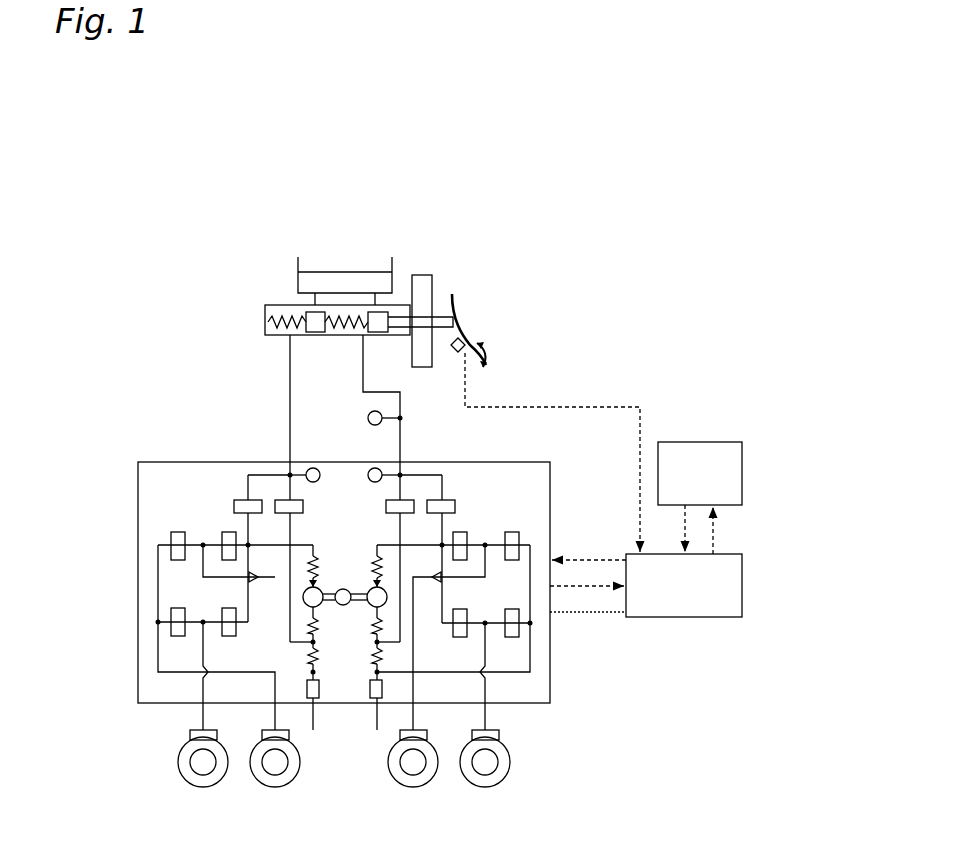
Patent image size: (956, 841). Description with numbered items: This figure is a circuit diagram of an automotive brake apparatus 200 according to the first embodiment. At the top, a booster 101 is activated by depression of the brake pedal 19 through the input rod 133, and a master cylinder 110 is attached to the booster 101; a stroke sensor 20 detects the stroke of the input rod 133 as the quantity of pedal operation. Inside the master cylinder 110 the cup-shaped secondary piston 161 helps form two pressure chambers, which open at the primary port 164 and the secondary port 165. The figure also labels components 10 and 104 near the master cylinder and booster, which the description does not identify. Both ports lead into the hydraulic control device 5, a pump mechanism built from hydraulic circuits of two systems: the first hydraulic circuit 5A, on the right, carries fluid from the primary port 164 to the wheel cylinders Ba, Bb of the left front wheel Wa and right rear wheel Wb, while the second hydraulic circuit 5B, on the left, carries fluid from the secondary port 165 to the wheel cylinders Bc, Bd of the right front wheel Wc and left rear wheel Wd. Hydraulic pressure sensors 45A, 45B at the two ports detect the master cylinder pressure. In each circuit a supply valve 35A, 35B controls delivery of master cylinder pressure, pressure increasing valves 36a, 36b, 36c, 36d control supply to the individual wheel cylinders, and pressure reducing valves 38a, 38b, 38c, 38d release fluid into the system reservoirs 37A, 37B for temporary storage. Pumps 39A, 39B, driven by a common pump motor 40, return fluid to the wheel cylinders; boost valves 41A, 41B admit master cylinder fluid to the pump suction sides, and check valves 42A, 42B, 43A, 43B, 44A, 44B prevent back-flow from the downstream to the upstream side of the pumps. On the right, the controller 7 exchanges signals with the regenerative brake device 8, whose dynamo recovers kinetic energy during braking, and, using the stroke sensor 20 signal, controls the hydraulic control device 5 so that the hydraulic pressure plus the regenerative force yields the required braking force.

The brake apparatus 200 is at (534, 241).
The booster 101 is at (450, 230).
The reservoir 10 is at (335, 258).
The master cylinder 110 is at (265, 316).
The secondary piston 161 is at (310, 314).
The primary port 164 is at (367, 338).
The secondary port 165 is at (285, 338).
The brake booster 104 is at (418, 275).
The input rod 133 is at (445, 306).
The brake pedal 19 is at (490, 350).
The stroke sensor 20 is at (455, 354).
The regenerative brake device 8 is at (700, 462).
The controller 7 is at (698, 608).
The hydraulic control device 5 is at (131, 585).
The first hydraulic circuit 5A is at (528, 692).
The second hydraulic circuit 5B is at (161, 693).
The check valve 42A is at (390, 540).
The check valve 42B is at (283, 540).
The hydraulic pressure sensor 45A is at (373, 468).
The hydraulic pressure sensor 45B is at (313, 468).
The supply valve 35A is at (454, 501).
The supply valve 35B is at (236, 501).
The pressure increasing valve 36a is at (467, 535).
The pressure increasing valve 36b is at (467, 612).
The pressure increasing valve 36c is at (222, 535).
The pressure increasing valve 36d is at (222, 612).
The pressure reducing valve 38a is at (519, 537).
The pressure reducing valve 38b is at (519, 633).
The pressure reducing valve 38c is at (172, 538).
The pressure reducing valve 38d is at (158, 624).
The boost valve 41A is at (382, 562).
The boost valve 41B is at (308, 566).
The pump 39A is at (375, 585).
The pump 39B is at (322, 588).
The pump motor 40 is at (343, 607).
The check valve 43A is at (377, 640).
The check valve 43B is at (305, 632).
The check valve 44A is at (382, 658).
The check valve 44B is at (305, 660).
The system reservoir 37A is at (376, 699).
The system reservoir 37B is at (313, 699).
The wheel cylinder Ba is at (426, 733).
The wheel cylinder Bb is at (499, 735).
The wheel cylinder Bc is at (262, 733).
The wheel cylinder Bd is at (189, 734).
The left front wheel Wa is at (392, 767).
The right rear wheel Wb is at (503, 770).
The right front wheel Wc is at (300, 762).
The left rear wheel Wd is at (186, 770).